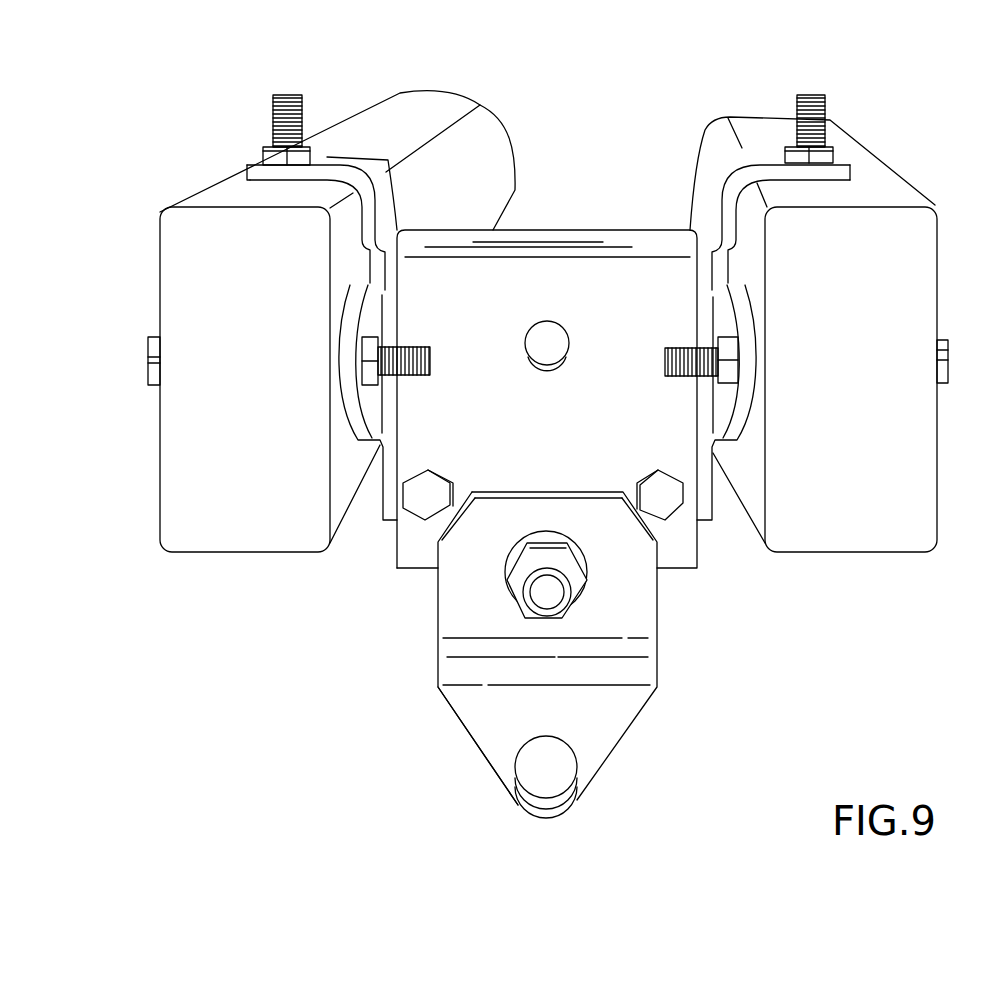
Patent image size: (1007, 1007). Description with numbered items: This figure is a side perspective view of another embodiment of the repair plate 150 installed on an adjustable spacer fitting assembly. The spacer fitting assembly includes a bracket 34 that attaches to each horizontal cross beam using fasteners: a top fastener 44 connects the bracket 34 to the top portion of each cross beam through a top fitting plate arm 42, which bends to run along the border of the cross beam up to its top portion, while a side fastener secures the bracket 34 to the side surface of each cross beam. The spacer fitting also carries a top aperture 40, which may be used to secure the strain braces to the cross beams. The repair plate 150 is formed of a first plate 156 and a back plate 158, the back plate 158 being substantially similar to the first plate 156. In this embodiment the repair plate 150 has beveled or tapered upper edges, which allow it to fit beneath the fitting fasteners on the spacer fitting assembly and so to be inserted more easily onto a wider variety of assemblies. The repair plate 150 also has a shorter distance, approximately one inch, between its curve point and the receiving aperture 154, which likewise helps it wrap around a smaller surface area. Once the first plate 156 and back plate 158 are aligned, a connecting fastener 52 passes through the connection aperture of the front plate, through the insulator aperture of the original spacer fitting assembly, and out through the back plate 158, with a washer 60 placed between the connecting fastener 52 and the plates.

The bracket 34 is at (388, 503).
The top aperture 40 is at (553, 340).
The top fitting plate arm 42 is at (250, 178).
The top fastener 44 is at (263, 152).
The connecting fastener 52 is at (555, 595).
The washer 60 is at (553, 550).
The repair plate 150 is at (685, 702).
The receiving aperture 154 is at (567, 798).
The first plate 156 is at (462, 672).
The back plate 158 is at (543, 790).